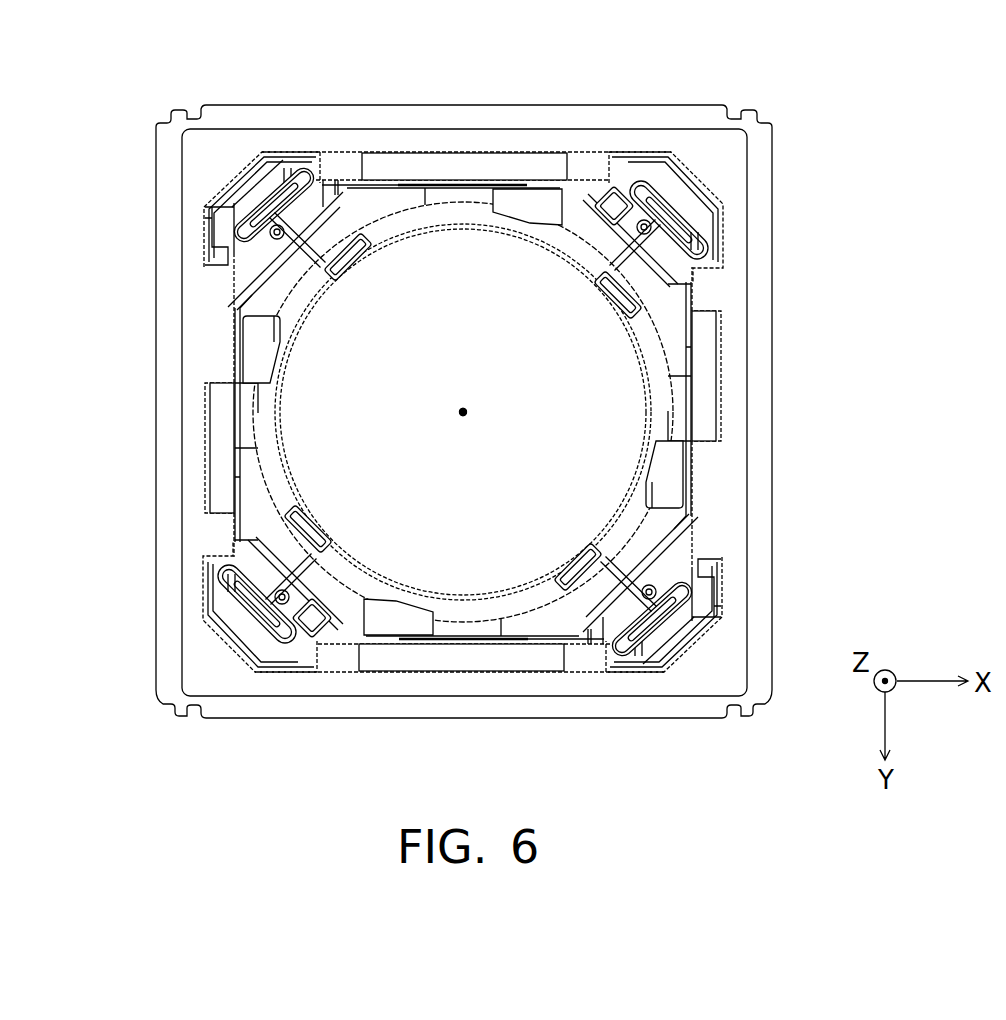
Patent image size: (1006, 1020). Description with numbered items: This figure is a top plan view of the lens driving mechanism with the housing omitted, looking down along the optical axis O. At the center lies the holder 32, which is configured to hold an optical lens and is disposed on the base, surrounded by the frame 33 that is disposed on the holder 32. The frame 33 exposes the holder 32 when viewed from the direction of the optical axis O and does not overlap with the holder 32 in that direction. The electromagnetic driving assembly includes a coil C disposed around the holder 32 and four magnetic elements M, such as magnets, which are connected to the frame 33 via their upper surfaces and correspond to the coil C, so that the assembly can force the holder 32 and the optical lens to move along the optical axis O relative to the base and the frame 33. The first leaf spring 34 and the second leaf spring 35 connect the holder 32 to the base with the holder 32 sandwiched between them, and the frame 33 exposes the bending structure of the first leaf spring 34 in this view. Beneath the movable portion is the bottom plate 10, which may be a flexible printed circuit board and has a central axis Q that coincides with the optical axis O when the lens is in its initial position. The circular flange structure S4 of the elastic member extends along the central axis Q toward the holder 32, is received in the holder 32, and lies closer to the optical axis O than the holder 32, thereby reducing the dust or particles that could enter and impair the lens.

The bottom plate 10 is at (321, 118).
The magnetic elements M is at (463, 172).
The coil C is at (580, 210).
The holder 32 is at (262, 345).
The flange structure S4 is at (651, 409).
The frame 33 is at (722, 497).
The first leaf spring 34 is at (722, 586).
The second leaf spring 35 is at (235, 641).
The optical axis O is at (470, 412).
The central axis Q is at (517, 413).